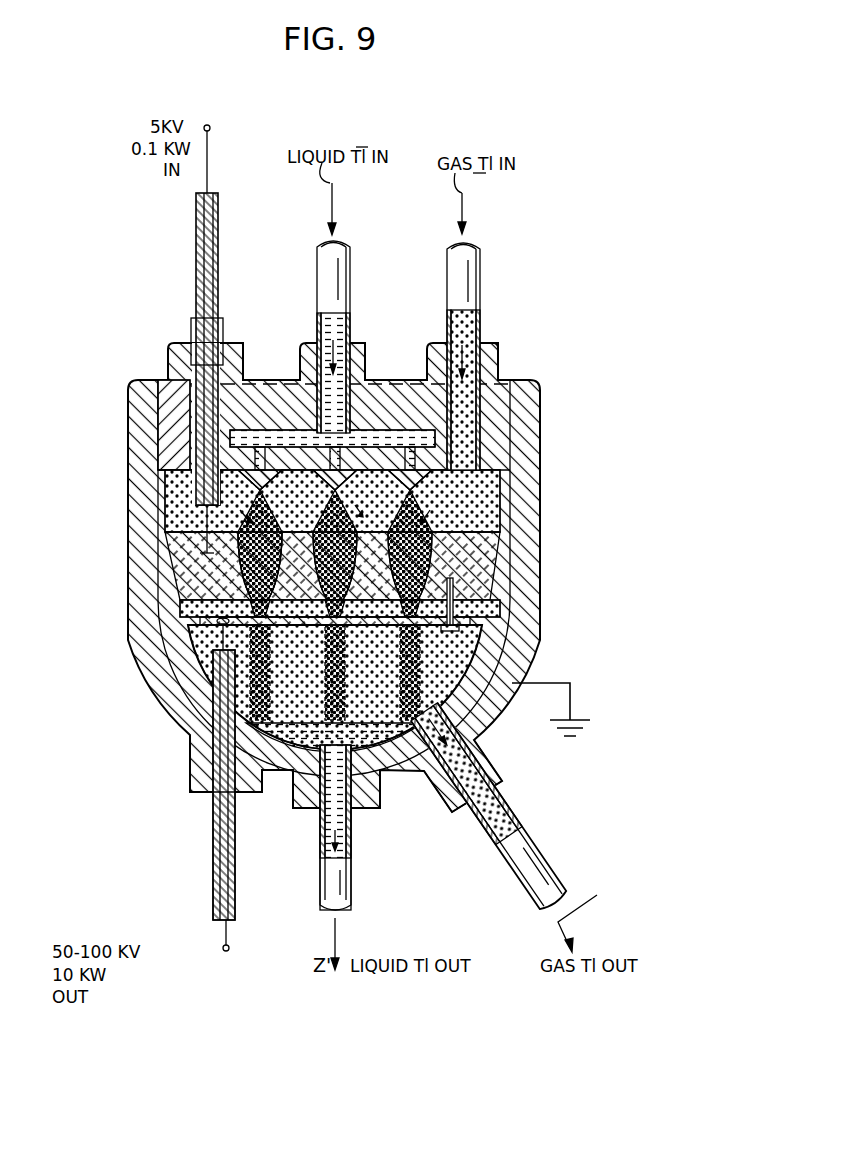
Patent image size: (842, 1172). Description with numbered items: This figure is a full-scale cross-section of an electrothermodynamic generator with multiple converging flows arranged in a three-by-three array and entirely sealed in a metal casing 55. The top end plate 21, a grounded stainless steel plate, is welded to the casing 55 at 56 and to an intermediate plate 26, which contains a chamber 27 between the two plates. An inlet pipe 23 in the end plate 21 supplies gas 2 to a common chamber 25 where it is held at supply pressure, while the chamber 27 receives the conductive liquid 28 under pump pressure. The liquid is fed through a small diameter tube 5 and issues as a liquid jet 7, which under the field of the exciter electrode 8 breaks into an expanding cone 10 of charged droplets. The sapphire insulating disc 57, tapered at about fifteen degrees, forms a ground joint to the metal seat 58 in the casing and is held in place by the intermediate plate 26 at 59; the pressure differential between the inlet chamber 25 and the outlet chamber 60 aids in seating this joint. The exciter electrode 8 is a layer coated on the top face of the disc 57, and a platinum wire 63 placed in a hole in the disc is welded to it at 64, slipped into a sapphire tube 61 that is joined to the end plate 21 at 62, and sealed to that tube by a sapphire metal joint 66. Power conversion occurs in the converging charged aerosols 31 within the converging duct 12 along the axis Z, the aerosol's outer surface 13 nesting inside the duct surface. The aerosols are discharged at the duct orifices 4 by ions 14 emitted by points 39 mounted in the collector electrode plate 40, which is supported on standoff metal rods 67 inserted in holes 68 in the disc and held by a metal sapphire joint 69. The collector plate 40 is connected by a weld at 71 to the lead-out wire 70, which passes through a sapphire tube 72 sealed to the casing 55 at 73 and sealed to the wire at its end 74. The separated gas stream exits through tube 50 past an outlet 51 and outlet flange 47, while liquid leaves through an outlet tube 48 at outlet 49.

The flowing gas 2 is at (375, 507).
The orifices 4 is at (283, 603).
The small diameter tube 5 is at (252, 492).
The liquid jet 7 is at (262, 490).
The exciter electrode 8 is at (445, 525).
The expanding cone 10 is at (272, 512).
The converging duct 12 is at (245, 549).
The outer surface 13 is at (265, 558).
The ions 14 is at (245, 606).
The top end plate 21 is at (170, 404).
The inlet pipe 23 is at (465, 206).
The common chamber 25 is at (480, 490).
The intermediate plate 26 is at (503, 451).
The chamber 27 is at (334, 211).
The conductive liquid 28 is at (240, 430).
The converging charged aerosols 31 is at (273, 555).
The points 39 is at (276, 622).
The collector electrode plate 40 is at (357, 628).
The gas outlet flange 47 is at (428, 760).
The liquid outlet tube 48 is at (320, 890).
The liquid outlet 49 is at (333, 930).
The gas outlet tube 50 is at (540, 858).
The gas outlet 51 is at (589, 918).
The metal casing 55 is at (527, 560).
The weld 56 is at (510, 380).
The sapphire insulating disc 57 is at (480, 545).
The metal seat 58 is at (500, 552).
The holding location 59 is at (500, 525).
The outlet chamber 60 is at (468, 662).
The sapphire tube 61 is at (196, 258).
The metal-sapphire joint 62 is at (220, 340).
The platinum wire 63 is at (208, 152).
The weld 64 is at (207, 527).
The sapphire metal joint 66 is at (218, 196).
The standoff metal rods 67 is at (462, 621).
The holes 68 is at (455, 588).
The metal sapphire joint 69 is at (460, 600).
The lead-out wire 70 is at (224, 946).
The weld 71 is at (223, 625).
The sapphire tube 72 is at (213, 856).
The sapphire/metal joint 73 is at (213, 786).
The tube end 74 is at (218, 925).
The axis Z is at (337, 199).